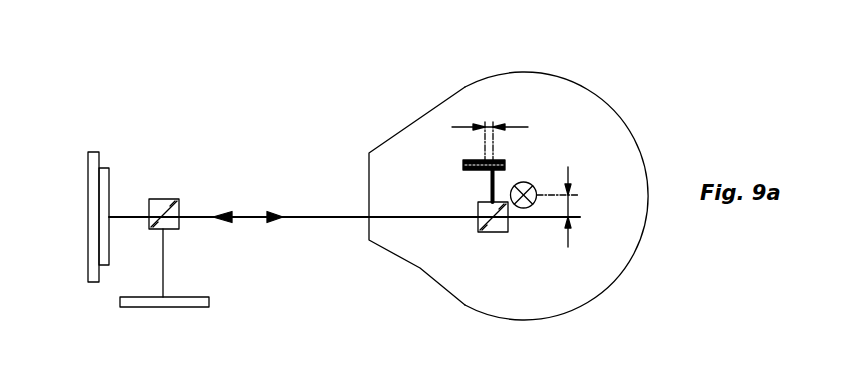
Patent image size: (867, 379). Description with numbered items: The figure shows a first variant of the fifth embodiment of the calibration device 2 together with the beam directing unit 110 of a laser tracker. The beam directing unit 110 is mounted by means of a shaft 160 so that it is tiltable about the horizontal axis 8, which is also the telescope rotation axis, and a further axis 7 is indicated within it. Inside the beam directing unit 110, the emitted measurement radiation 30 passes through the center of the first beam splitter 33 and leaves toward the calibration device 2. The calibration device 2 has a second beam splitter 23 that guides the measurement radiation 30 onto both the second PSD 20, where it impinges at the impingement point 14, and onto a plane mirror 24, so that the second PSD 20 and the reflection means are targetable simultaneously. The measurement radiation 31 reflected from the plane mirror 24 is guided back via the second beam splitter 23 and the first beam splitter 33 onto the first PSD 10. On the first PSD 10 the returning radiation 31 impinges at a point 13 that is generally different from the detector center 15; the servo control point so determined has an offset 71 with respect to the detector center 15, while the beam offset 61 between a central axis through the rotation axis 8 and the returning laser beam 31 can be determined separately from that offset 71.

The calibration device 2 is at (163, 152).
The axis 7 is at (436, 128).
The horizontal axis 8 is at (552, 172).
The position-sensitive detector 10 is at (581, 121).
The impingement point 13 is at (452, 226).
The impingement point 14 is at (66, 217).
The detector center 15 is at (451, 185).
The second PSD 20 is at (66, 239).
The second beam splitter 23 is at (162, 210).
The plane mirror 24 is at (130, 320).
The measurement radiation 30 is at (316, 191).
The reflected measurement radiation 31 is at (246, 269).
The first beam splitter 33 is at (428, 268).
The beam offset 61 is at (626, 207).
The offset 71 is at (532, 101).
The beam directing unit 110 is at (381, 182).
The shaft 160 is at (556, 201).